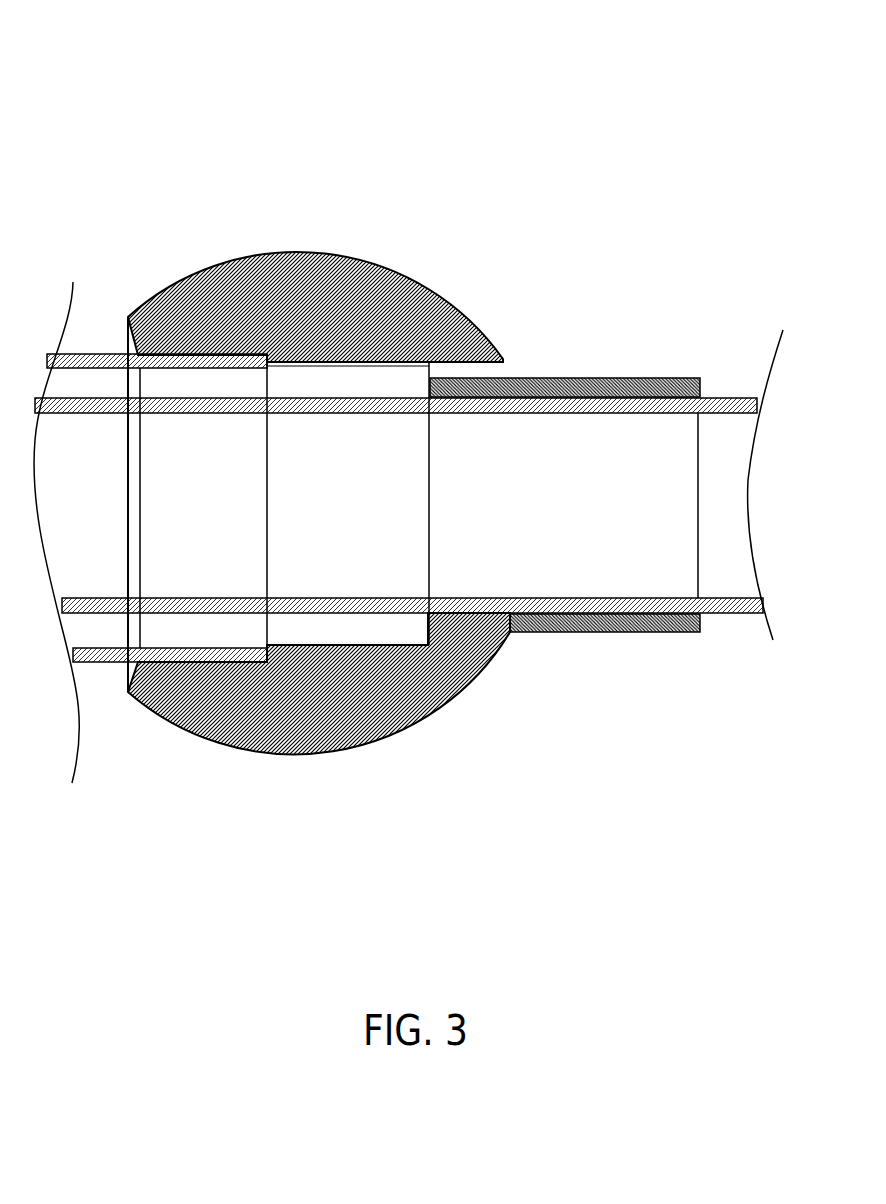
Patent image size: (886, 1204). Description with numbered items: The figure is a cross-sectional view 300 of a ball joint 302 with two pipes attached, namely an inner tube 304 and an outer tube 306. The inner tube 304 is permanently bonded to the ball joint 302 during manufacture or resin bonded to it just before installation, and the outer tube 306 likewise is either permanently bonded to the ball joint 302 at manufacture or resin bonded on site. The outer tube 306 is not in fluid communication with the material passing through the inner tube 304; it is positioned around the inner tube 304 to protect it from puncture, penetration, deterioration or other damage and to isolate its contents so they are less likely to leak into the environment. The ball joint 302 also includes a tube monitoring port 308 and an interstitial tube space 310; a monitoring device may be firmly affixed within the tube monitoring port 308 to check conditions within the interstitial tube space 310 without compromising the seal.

The cross-sectional view 300 is at (133, 103).
The ball joint 302 is at (445, 695).
The inner tube 304 is at (563, 405).
The outer tube 306 is at (108, 650).
The tube monitoring port 308 is at (475, 372).
The interstitial tube space 310 is at (365, 387).